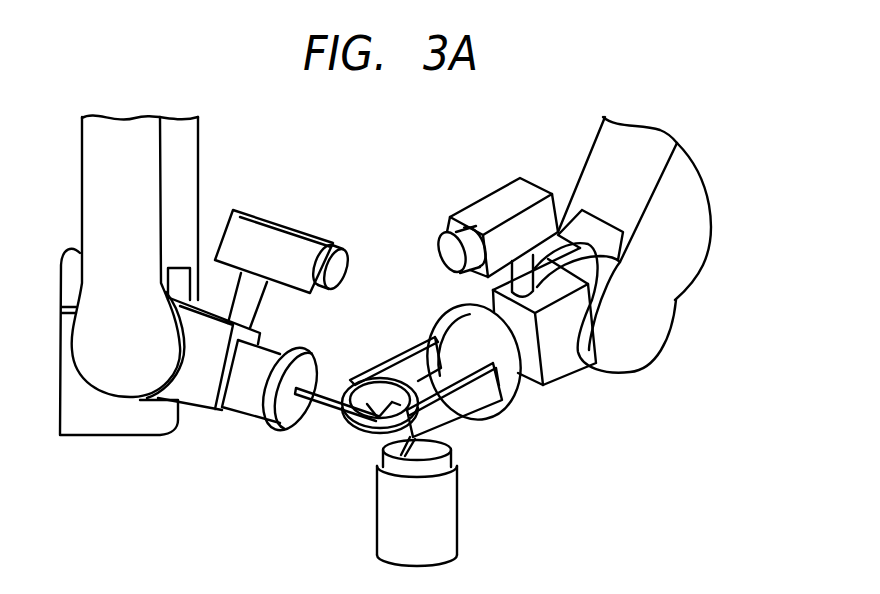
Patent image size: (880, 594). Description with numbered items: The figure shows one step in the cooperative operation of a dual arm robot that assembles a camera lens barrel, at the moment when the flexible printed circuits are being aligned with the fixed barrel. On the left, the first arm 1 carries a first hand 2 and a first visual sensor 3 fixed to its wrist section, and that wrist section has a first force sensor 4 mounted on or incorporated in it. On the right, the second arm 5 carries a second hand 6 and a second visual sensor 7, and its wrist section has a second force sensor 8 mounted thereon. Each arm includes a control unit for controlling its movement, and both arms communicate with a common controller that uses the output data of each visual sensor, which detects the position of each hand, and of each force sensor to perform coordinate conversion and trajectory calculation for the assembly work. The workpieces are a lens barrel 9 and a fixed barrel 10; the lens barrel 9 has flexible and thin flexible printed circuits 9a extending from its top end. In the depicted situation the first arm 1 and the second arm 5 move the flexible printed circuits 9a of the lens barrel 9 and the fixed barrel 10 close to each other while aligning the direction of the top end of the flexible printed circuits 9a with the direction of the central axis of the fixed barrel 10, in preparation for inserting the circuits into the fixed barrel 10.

The first arm 1 is at (183, 143).
The first hand 2 is at (338, 400).
The first visual sensor 3 is at (303, 245).
The first force sensor 4 is at (248, 400).
The second arm 5 is at (593, 157).
The second hand 6 is at (418, 360).
The second visual sensor 7 is at (493, 200).
The second force sensor 8 is at (528, 360).
The lens barrel 9 is at (452, 518).
The flexible printed circuits 9a is at (390, 397).
The fixed barrel 10 is at (345, 432).